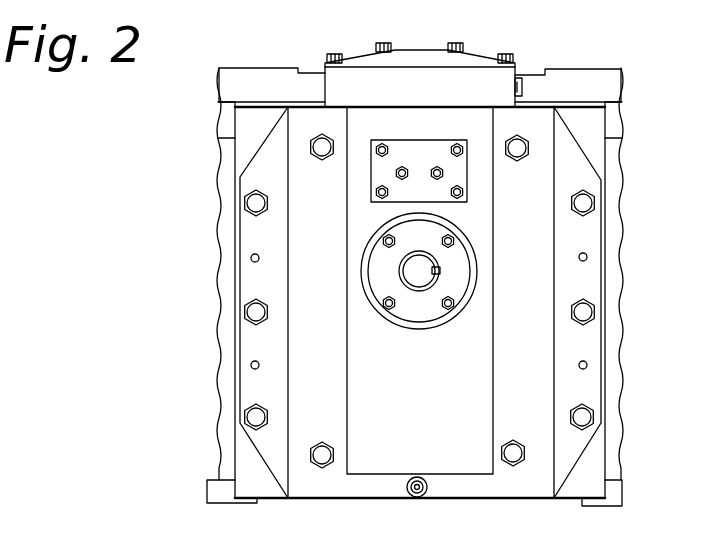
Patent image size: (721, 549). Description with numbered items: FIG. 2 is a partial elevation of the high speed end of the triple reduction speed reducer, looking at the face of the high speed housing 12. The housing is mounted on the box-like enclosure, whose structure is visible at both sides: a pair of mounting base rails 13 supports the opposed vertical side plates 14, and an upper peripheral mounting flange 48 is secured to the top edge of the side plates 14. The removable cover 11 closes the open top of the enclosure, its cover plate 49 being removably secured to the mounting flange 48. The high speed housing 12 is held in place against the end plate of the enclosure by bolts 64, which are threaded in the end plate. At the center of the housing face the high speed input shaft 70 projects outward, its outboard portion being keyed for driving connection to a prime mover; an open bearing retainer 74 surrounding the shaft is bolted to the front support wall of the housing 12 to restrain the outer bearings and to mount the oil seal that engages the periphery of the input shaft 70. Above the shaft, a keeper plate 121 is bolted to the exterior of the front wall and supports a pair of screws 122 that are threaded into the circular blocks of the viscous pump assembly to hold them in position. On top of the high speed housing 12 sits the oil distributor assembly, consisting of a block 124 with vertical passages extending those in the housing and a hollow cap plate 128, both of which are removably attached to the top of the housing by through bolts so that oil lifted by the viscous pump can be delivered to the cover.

The removable cover 11 is at (589, 67).
The high speed housing 12 is at (352, 486).
The mounting base rails 13 is at (217, 494).
The vertical side plates 14 is at (218, 383).
The upper peripheral mounting flange 48 is at (226, 120).
The cover plate 49 is at (272, 79).
The bolts 64 is at (588, 205).
The high speed input shaft 70 is at (415, 281).
The open bearing retainer 74 is at (437, 324).
The keeper plate 121 is at (441, 197).
The screws 122 is at (402, 167).
The block 124 is at (468, 83).
The hollow cap plate 128 is at (418, 50).